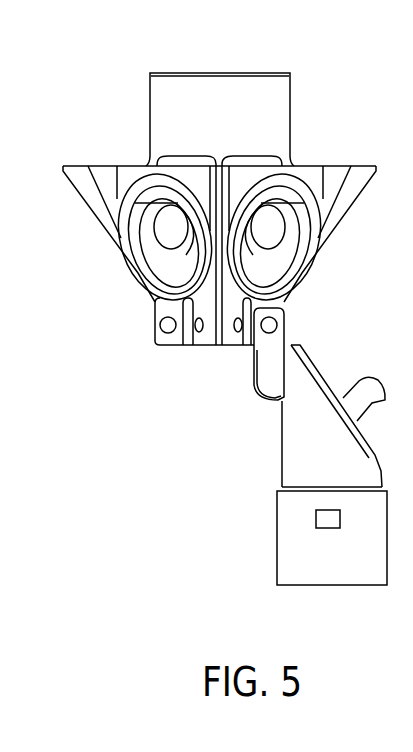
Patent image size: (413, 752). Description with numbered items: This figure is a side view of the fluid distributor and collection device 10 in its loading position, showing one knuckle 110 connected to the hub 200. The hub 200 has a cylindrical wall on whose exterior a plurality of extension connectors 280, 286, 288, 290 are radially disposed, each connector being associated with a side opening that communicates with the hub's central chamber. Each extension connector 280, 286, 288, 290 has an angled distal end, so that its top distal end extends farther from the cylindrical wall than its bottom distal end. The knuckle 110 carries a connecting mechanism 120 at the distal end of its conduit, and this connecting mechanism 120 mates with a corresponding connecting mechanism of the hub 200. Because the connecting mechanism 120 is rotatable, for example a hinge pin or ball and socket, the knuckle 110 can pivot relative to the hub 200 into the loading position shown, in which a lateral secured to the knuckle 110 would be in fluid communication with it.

The device 10 is at (186, 544).
The knuckle 110 is at (232, 464).
The connecting mechanism 120 is at (266, 353).
The hub 200 is at (332, 93).
The extension connector 280 is at (351, 163).
The extension connector 286 is at (92, 163).
The extension connector 288 is at (143, 278).
The extension connector 290 is at (288, 283).